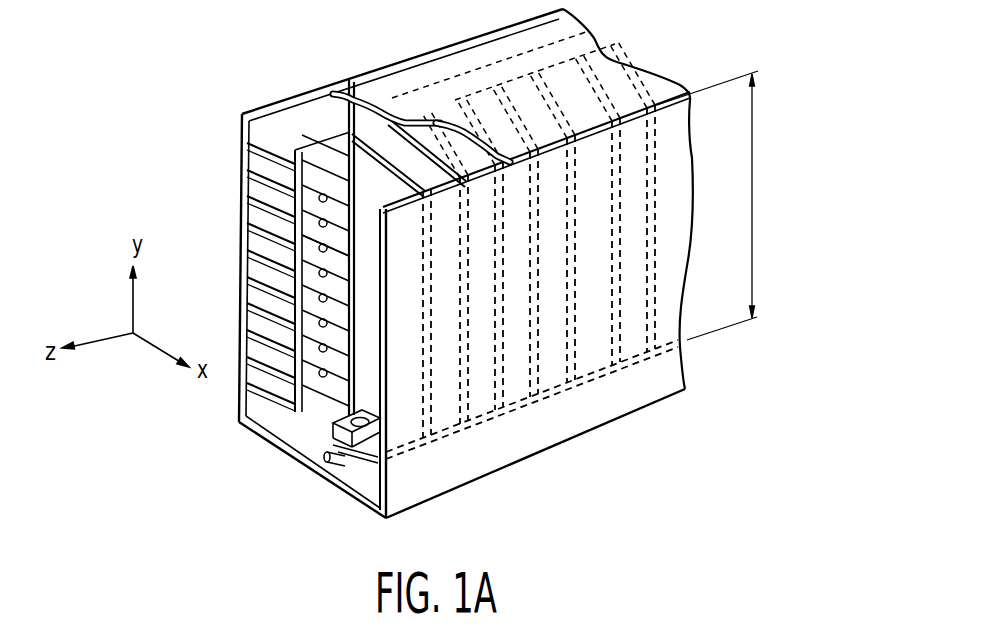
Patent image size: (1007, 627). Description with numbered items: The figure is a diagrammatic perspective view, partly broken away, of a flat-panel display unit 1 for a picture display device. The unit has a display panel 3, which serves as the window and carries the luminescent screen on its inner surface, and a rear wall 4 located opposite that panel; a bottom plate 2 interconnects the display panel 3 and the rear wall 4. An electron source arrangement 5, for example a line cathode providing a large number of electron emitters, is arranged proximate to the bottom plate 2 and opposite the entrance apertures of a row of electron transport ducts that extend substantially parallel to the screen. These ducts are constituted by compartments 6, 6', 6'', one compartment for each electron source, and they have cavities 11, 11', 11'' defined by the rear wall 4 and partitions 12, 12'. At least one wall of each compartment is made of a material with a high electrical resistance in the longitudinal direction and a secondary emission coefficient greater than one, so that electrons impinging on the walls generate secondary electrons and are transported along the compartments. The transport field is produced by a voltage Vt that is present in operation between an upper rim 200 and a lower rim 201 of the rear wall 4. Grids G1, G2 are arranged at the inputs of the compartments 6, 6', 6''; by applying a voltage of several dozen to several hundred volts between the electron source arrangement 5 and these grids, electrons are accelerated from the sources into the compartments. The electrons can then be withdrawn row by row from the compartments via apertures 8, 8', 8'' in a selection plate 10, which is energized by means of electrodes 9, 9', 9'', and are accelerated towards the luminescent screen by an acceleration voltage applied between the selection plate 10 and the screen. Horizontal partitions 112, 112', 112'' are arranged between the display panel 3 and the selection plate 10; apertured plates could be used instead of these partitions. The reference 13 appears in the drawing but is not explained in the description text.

The flat-panel display unit 1 is at (471, 279).
The bottom plate 2 is at (272, 446).
The display panel 3 is at (292, 120).
The rear wall 4 is at (637, 400).
The electron source arrangement 5 is at (343, 460).
The compartment 6 is at (428, 364).
The compartment 6' is at (468, 313).
The compartment 6'' is at (517, 295).
The aperture 8 is at (246, 146).
The aperture 8' is at (249, 262).
The aperture 8'' is at (246, 295).
The electrode 9 is at (324, 231).
The electrode 9' is at (338, 172).
The electrode 9'' is at (339, 257).
The selection plate 10 is at (587, 20).
The cavity 11 is at (278, 332).
The cavity 11' is at (386, 77).
The cavity 11'' is at (452, 88).
The partition 12 is at (388, 186).
The partition 12' is at (427, 198).
The bottom plate inner surface 13 is at (302, 411).
The horizontal partition 112 is at (236, 175).
The horizontal partition 112' is at (213, 196).
The horizontal partition 112'' is at (223, 232).
The upper rim 200 is at (667, 90).
The lower rim 201 is at (669, 363).
The grid G1 is at (355, 460).
The grid G2 is at (333, 442).
The transport voltage Vt is at (752, 173).